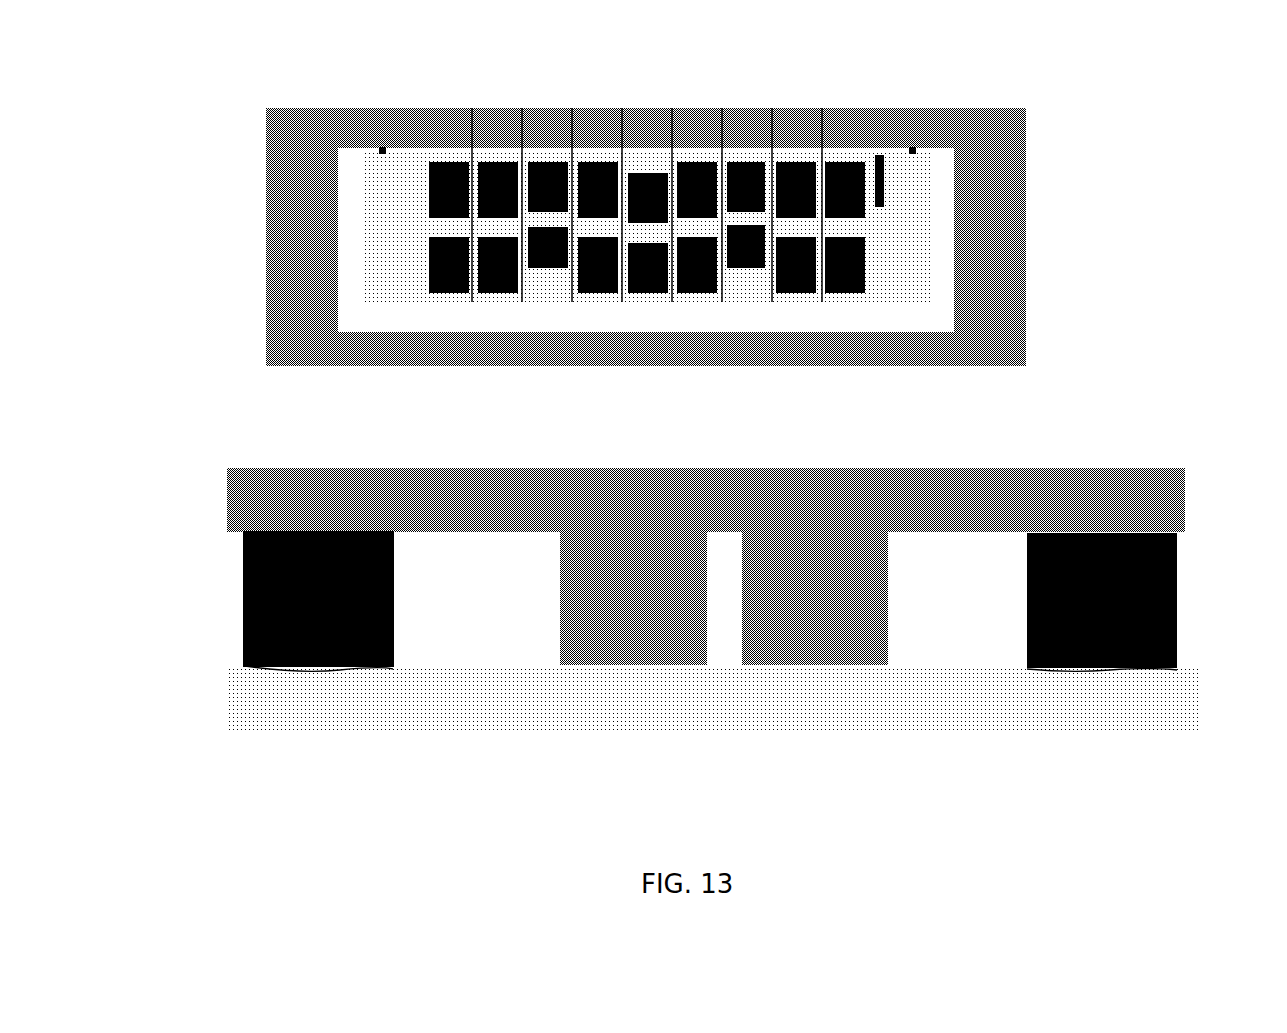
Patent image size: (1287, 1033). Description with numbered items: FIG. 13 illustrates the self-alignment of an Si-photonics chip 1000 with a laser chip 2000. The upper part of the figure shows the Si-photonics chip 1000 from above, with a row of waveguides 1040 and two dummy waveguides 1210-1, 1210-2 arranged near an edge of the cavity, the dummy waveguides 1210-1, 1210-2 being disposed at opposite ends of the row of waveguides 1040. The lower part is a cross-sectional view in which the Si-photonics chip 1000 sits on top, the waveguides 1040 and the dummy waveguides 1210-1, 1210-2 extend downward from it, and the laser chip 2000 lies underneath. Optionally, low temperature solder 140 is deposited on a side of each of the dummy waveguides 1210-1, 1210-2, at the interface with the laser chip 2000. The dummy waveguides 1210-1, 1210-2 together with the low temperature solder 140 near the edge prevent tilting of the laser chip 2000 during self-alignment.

The Si-photonics chip 1000 is at (262, 210).
The laser chip 2000 is at (225, 707).
The dummy waveguide 1210-1 is at (381, 146).
The dummy waveguide 1210-2 is at (911, 146).
The waveguide 1040 is at (596, 547).
The low temperature solder 140 is at (395, 667).